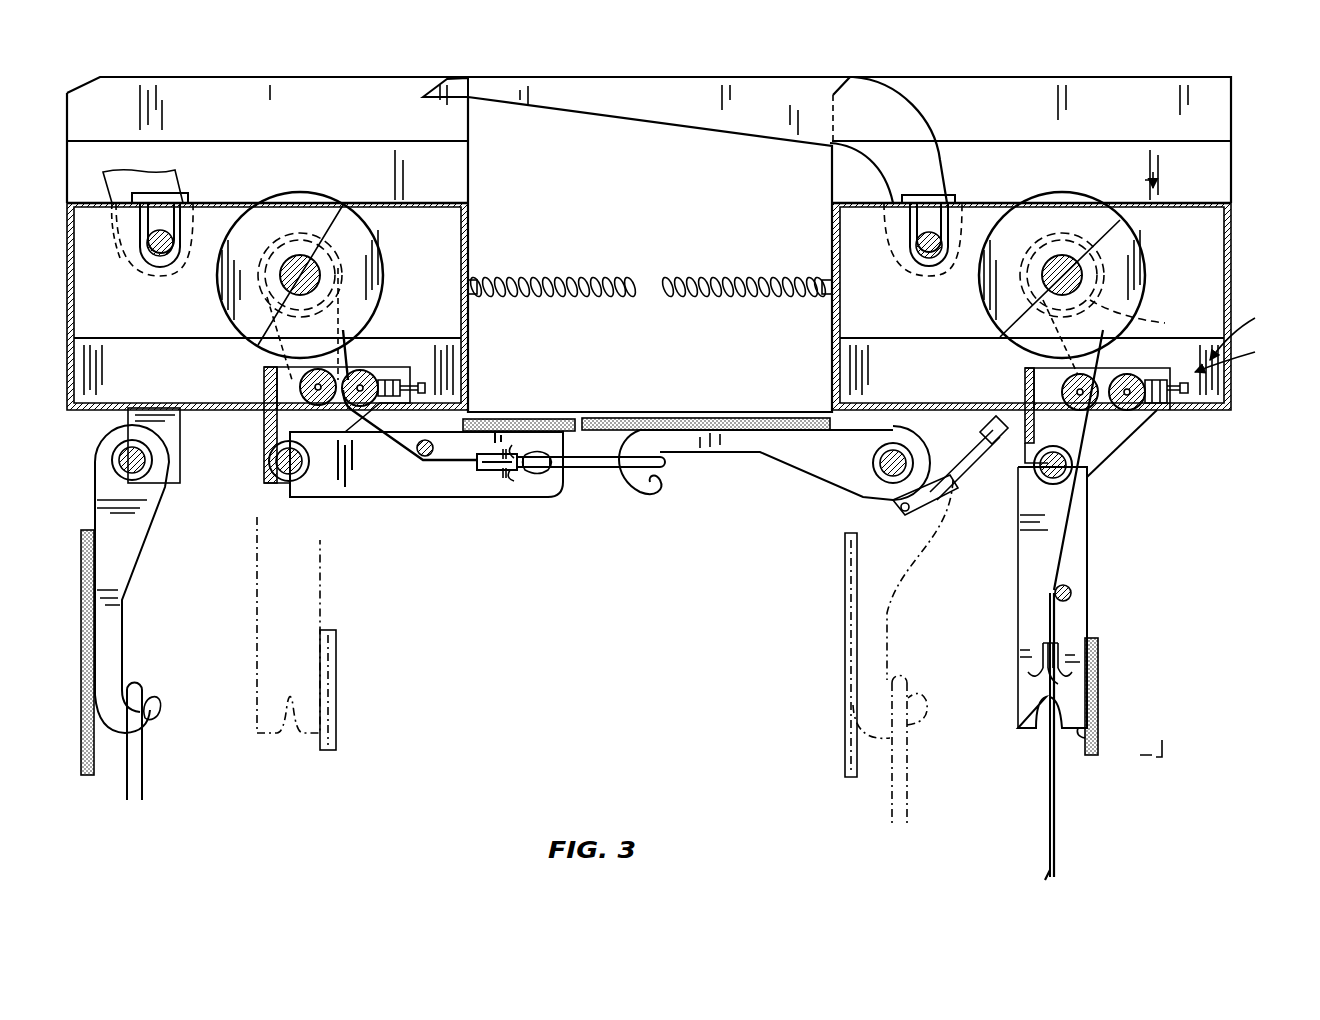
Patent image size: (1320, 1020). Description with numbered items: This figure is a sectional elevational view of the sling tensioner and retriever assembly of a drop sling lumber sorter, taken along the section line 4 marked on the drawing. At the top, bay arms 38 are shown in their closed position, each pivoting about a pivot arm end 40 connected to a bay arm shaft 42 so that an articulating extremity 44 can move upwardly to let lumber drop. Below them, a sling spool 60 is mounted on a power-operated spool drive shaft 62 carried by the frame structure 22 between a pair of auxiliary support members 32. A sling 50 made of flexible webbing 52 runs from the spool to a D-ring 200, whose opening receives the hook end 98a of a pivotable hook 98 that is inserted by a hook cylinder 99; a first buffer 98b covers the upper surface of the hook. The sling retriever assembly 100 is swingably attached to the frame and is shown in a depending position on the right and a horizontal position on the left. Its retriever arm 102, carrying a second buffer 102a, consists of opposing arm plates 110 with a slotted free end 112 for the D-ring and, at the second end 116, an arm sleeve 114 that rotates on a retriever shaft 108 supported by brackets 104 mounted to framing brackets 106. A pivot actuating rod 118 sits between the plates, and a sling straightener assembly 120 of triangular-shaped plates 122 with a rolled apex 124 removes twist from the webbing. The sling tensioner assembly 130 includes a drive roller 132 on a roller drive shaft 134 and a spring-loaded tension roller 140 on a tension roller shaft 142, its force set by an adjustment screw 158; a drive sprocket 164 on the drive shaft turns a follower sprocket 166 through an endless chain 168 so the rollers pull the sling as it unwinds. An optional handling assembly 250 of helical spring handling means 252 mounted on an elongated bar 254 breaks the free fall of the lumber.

The section line 4- 4 is at (1143, 467).
The frame structure 22 is at (470, 300).
The auxiliary support members 32 is at (76, 295).
The bay arms 38 is at (662, 90).
The pivot arm end 40 is at (950, 232).
The bay arm shaft 42 is at (925, 260).
The articulating extremity 44 is at (492, 78).
The slings 50 is at (1055, 832).
The flexible webbing 52 is at (1056, 793).
The sling spool 60 is at (292, 205).
The spool drive shaft 62 is at (322, 270).
The pivotable hook 98 is at (118, 560).
The hook end 98a is at (162, 705).
The first buffer 98b is at (88, 630).
The hook cylinder 99 is at (853, 562).
The sling retriever assembly 100 is at (364, 522).
The retriever arm 102 is at (425, 498).
The second buffer 102a is at (542, 418).
The brackets 104 is at (262, 433).
The framing brackets 106 is at (192, 380).
The retriever shaft 108 is at (272, 472).
The arm plates 110 is at (1015, 580).
The slotted free end 112 is at (578, 385).
The arm sleeve 114 is at (1048, 482).
The second end 116 is at (282, 498).
The pivot actuating rod 118 is at (440, 443).
The sling straightener assembly 120 is at (1040, 650).
The triangular-shaped plates 122 is at (1060, 652).
The rolled apex 124 is at (1065, 690).
The sling tensioner assembly 130 is at (1247, 349).
The drive roller 132 is at (300, 385).
The roller drive shaft 134 is at (1066, 385).
The tension roller 140 is at (365, 372).
The tension roller shaft 142 is at (1255, 325).
The adjustment screw 158 is at (1190, 390).
The drive sprocket 164 is at (1040, 262).
The follower sprocket 166 is at (1102, 425).
The endless chain 168 is at (1150, 305).
The D-ring 200 is at (142, 780).
The handling assembly 250 is at (605, 268).
The handling means 252 is at (705, 275).
The elongated bar 254 is at (825, 298).